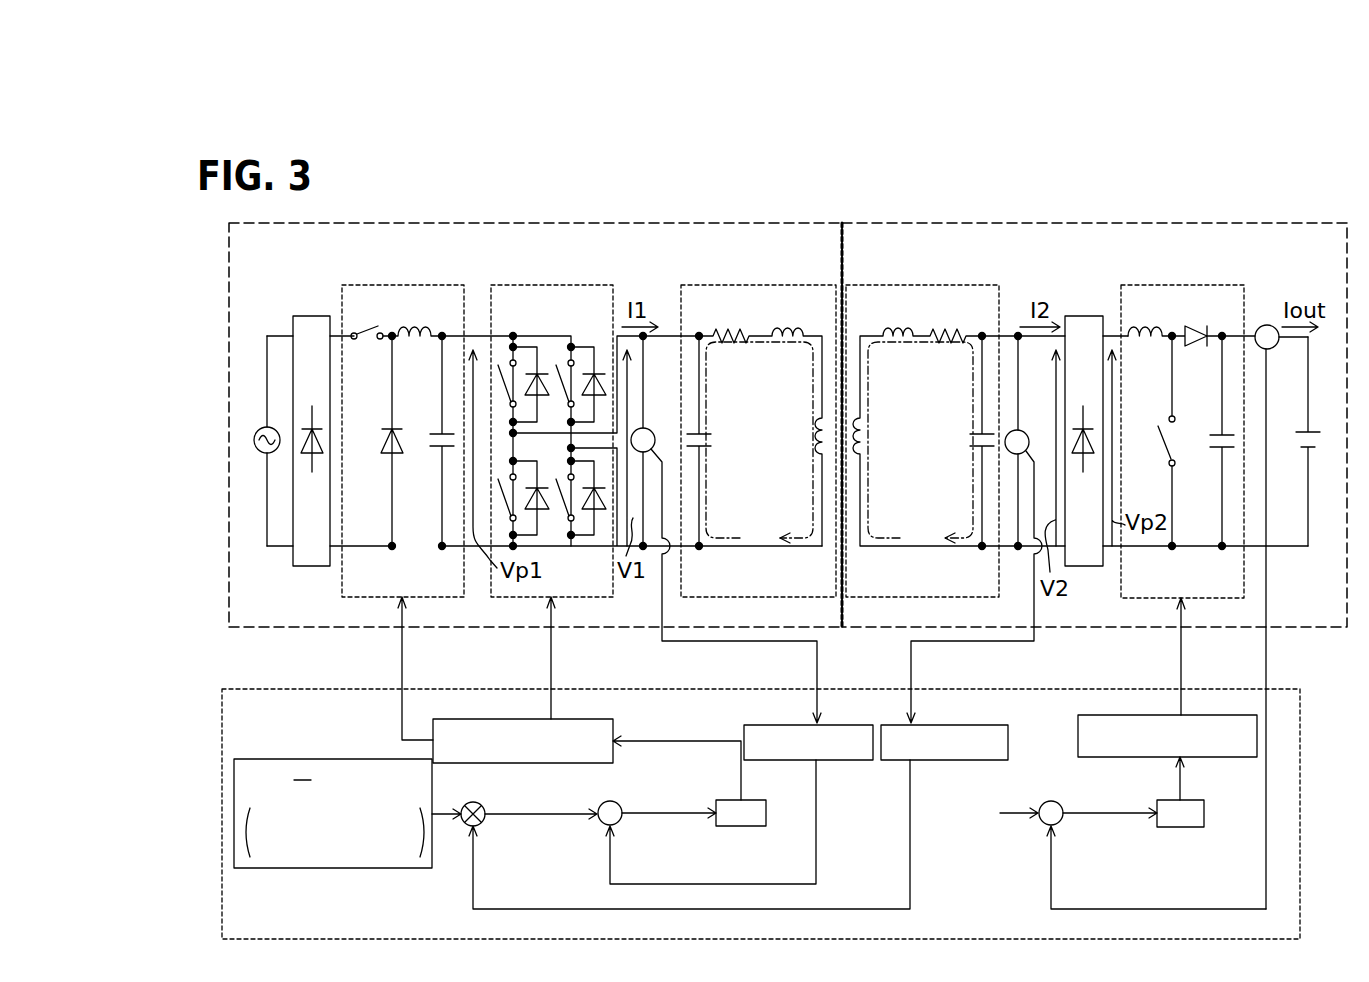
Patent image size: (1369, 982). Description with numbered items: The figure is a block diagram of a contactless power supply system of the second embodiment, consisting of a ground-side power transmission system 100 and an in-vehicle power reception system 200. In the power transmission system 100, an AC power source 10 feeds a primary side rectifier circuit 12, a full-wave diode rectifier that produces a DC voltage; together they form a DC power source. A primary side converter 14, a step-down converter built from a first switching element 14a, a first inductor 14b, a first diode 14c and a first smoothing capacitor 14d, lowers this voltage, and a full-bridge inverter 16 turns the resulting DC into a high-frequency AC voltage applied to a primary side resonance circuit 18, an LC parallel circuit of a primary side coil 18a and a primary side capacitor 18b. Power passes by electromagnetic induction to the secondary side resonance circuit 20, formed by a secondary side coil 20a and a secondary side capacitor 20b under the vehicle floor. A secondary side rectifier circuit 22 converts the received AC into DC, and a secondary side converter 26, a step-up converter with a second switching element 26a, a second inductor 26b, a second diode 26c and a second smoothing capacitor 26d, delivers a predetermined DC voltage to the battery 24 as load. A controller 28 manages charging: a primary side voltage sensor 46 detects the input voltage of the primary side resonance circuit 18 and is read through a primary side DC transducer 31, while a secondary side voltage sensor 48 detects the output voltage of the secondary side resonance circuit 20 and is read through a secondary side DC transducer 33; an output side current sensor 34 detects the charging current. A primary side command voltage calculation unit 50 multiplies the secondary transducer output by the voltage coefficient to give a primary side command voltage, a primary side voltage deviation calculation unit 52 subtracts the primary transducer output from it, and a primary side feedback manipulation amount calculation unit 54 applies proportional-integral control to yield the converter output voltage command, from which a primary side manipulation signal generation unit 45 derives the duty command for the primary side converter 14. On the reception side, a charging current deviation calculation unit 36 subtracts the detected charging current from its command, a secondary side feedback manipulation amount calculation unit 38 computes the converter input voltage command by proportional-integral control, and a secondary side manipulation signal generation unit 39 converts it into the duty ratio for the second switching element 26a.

The AC power source 10 is at (262, 430).
The primary side rectifier circuit 12 is at (322, 316).
The primary side converter 14 is at (403, 413).
The first switching element 14a is at (363, 333).
The first inductor 14b is at (418, 332).
The first diode 14c is at (383, 432).
The first smoothing capacitor 14d is at (432, 434).
The full-bridge inverter 16 is at (595, 285).
The primary side resonance circuit 18 is at (758, 413).
The primary side coil 18a is at (806, 424).
The primary side capacitor 18b is at (708, 434).
The secondary side resonance circuit 20 is at (955, 413).
The secondary side coil 20a is at (868, 426).
The secondary side capacitor 20b is at (962, 434).
The secondary side rectifier circuit 22 is at (1095, 316).
The battery 24 is at (1312, 432).
The secondary side converter 26 is at (1182, 414).
The second switching element 26a is at (1168, 418).
The second inductor 26b is at (1145, 333).
The second diode 26c is at (1205, 333).
The second smoothing capacitor 26d is at (1216, 434).
The controller 28 is at (1280, 689).
The primary side DC transducer 31 is at (851, 725).
The secondary side DC transducer 33 is at (946, 725).
The output side current sensor 34 is at (1267, 325).
The charging current deviation calculation unit 36 is at (1051, 801).
The secondary side feedback manipulation amount calculation unit 38 is at (1195, 827).
The secondary side manipulation signal generation unit 39 is at (1195, 715).
The primary side manipulation signal generation unit 45 is at (601, 719).
The primary side voltage sensor 46 is at (655, 430).
The secondary side voltage sensor 48 is at (1029, 431).
The primary side command voltage calculation unit 50 is at (473, 802).
The primary side voltage deviation calculation unit 52 is at (611, 801).
The primary side feedback manipulation amount calculation unit 54 is at (757, 827).
The power transmission system 100 is at (806, 223).
The power reception system 200 is at (1313, 223).